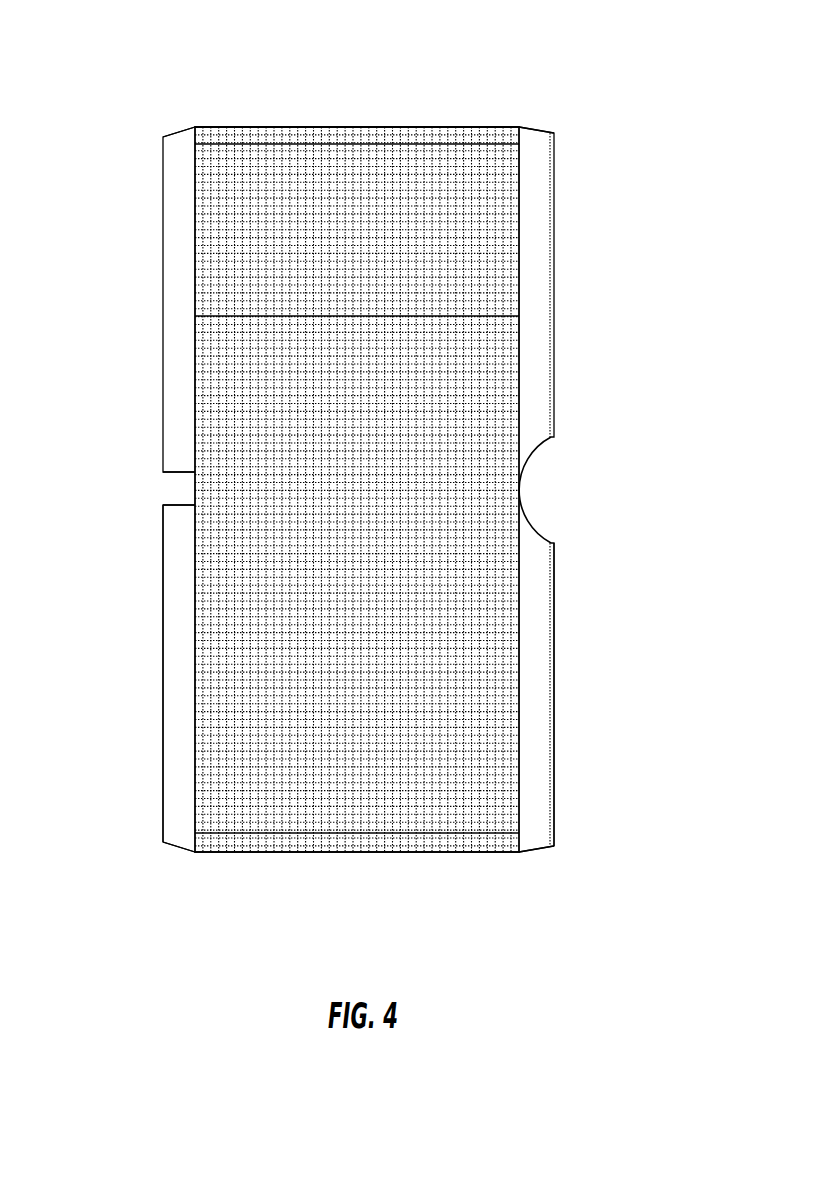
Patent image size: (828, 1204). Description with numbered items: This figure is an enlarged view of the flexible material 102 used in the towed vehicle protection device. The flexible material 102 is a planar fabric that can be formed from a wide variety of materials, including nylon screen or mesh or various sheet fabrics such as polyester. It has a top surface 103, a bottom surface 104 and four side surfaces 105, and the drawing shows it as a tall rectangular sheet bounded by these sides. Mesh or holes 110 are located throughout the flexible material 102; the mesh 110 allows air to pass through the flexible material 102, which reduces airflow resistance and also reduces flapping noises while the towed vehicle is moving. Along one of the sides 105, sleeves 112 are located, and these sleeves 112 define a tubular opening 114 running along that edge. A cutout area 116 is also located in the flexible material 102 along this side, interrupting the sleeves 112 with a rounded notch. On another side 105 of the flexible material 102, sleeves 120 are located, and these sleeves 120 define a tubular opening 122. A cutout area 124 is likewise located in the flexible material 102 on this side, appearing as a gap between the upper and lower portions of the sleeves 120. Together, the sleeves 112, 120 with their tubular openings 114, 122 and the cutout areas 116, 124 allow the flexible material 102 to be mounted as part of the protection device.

The flexible material 102 is at (315, 124).
The top surface 103 is at (407, 140).
The bottom surface 104 is at (240, 127).
The side surfaces 105 is at (162, 640).
The mesh 110 is at (448, 846).
The sleeves 112 is at (556, 262).
The tubular opening 114 is at (535, 133).
The cutout area 116 is at (528, 478).
The sleeves 120 is at (163, 365).
The tubular opening 122 is at (175, 134).
The cutout area 124 is at (178, 488).